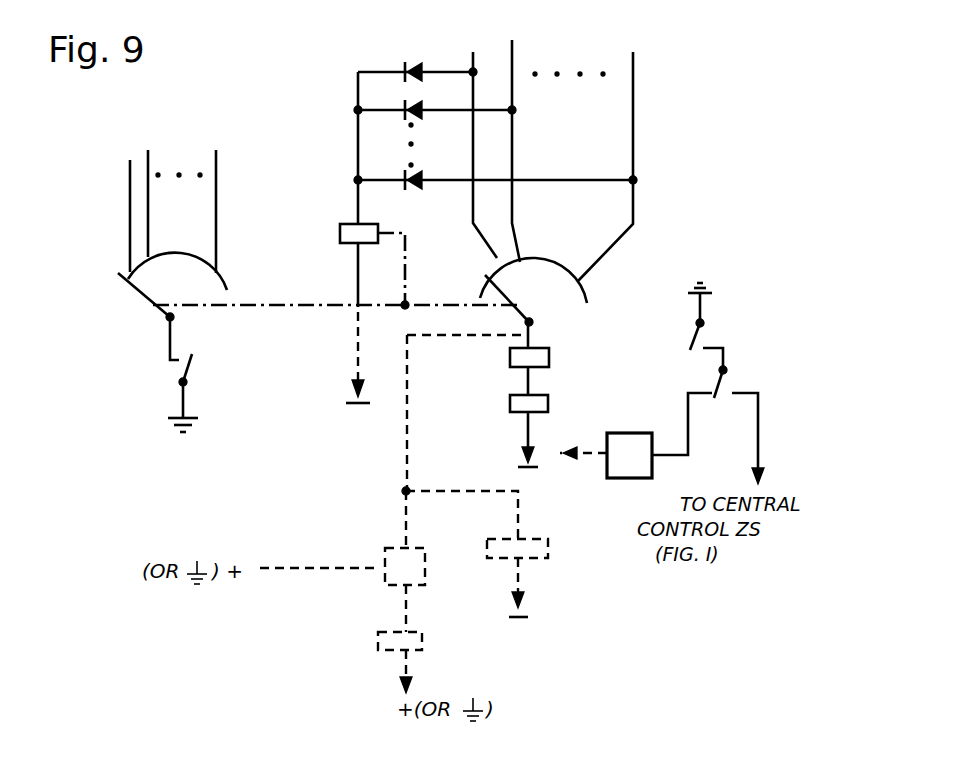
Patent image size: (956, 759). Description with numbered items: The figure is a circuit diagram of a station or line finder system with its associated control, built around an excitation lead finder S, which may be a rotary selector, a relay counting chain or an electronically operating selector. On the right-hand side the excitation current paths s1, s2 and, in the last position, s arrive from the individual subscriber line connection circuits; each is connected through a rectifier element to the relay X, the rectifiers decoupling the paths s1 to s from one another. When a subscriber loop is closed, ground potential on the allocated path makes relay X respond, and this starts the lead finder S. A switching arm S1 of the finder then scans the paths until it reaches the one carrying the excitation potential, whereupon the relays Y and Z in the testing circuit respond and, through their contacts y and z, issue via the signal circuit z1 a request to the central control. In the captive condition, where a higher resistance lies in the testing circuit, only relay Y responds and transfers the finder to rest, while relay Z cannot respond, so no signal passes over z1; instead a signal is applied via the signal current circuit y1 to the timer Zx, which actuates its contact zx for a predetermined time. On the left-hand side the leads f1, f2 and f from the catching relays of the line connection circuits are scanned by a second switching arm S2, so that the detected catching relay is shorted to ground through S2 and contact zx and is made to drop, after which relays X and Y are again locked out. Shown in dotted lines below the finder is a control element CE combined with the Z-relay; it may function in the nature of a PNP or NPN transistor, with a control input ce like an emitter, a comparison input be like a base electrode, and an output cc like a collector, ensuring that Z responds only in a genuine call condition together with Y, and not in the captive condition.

The catching relay lead f1 is at (130, 171).
The catching relay lead f2 is at (166, 134).
The catching relay lead f is at (226, 132).
The switching arm S2 is at (158, 284).
The timer contact zx is at (190, 368).
The excitation lead finder S is at (312, 345).
The relay X is at (340, 233).
The excitation current path s1 is at (483, 38).
The excitation current path s2 is at (524, 27).
The excitation current path s is at (642, 38).
The switching arm S1 is at (520, 284).
The relay Y is at (510, 368).
The relay Z is at (510, 414).
The control element CE is at (342, 561).
The control input ce is at (406, 546).
The comparison input be is at (385, 576).
The output cc is at (408, 590).
The relay Y contact y is at (690, 348).
The relay Z contact z is at (718, 384).
The signal current circuit y1 is at (690, 440).
The signal circuit z1 is at (756, 434).
The timer Zx is at (610, 440).